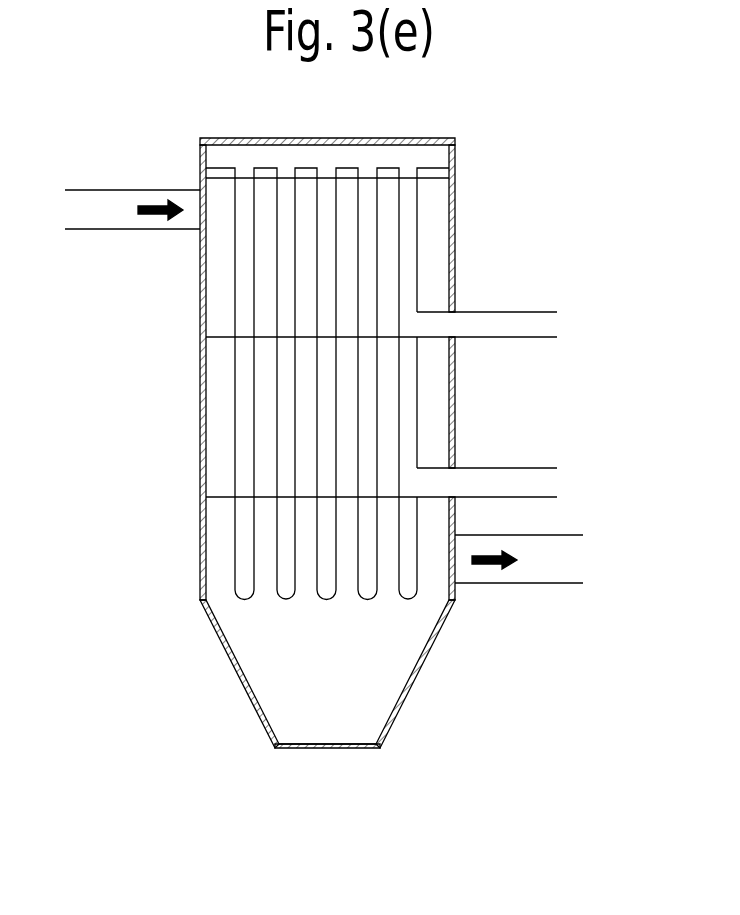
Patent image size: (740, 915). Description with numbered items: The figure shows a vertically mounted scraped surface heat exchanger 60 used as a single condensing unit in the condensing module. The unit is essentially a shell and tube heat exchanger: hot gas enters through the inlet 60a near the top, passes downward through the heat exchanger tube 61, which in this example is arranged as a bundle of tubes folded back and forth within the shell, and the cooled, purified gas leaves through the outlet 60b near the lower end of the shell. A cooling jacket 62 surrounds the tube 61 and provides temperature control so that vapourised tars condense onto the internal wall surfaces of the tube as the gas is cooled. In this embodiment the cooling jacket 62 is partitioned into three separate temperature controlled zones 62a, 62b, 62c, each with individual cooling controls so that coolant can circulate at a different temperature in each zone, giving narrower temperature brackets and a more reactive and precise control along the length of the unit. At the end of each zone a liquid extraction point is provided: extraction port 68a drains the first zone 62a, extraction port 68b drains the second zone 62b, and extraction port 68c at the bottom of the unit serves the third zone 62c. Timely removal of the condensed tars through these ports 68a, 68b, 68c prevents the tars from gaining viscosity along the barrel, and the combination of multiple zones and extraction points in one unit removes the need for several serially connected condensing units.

The scraped surface heat exchanger 60 is at (200, 657).
The inlet 60a is at (110, 207).
The outlet 60b is at (517, 573).
The heat exchanger tube 61 is at (398, 260).
The cooling jacket 62 is at (435, 422).
The temperature controlled zone 62a is at (218, 232).
The temperature controlled zone 62b is at (218, 358).
The temperature controlled zone 62c is at (220, 522).
The extraction port 68a is at (540, 325).
The extraction port 68b is at (550, 484).
The extraction port 68c is at (322, 752).